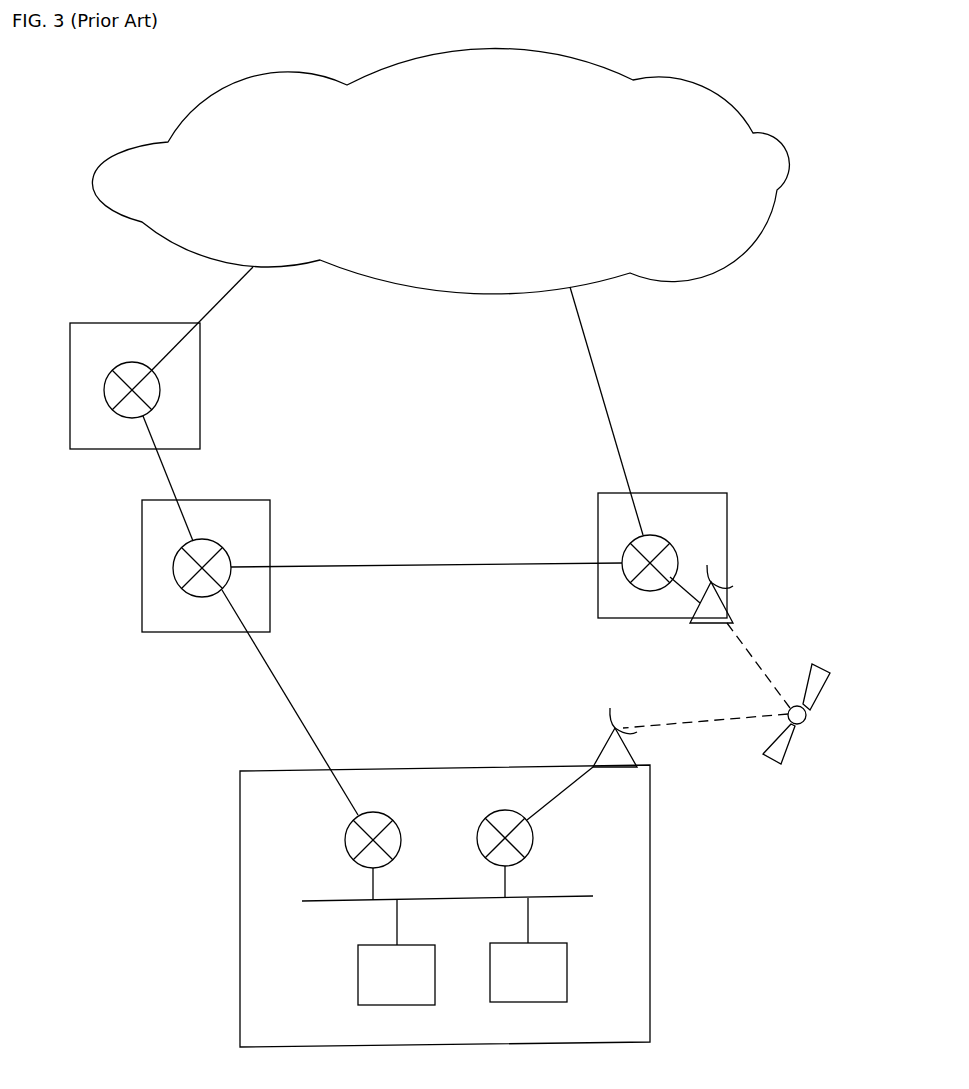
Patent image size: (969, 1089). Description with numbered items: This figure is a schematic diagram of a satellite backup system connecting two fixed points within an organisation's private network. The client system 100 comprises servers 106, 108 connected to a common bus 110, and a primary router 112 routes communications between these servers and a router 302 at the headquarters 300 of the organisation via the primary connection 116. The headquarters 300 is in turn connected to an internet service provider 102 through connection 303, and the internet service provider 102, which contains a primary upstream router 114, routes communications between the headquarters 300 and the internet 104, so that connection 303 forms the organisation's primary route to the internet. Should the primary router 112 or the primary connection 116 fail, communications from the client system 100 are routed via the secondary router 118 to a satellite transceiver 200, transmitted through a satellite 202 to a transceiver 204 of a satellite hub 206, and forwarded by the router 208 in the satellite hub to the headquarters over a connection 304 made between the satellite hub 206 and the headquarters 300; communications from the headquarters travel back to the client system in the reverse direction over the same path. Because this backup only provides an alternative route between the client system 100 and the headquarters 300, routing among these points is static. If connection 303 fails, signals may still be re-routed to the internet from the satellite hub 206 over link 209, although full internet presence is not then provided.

The client system 100 is at (240, 995).
The internet service provider 102 is at (70, 412).
The internet 104 is at (183, 263).
The server 106 is at (388, 1005).
The server 108 is at (540, 1003).
The common bus 110 is at (550, 898).
The primary router 112 is at (345, 838).
The primary upstream router 114 is at (163, 386).
The primary connection 116 is at (275, 690).
The secondary router 118 is at (533, 828).
The satellite transceiver 200 is at (602, 749).
The satellite 202 is at (807, 720).
The transceiver 204 is at (702, 623).
The satellite hub 206 is at (730, 492).
The router 208 is at (677, 552).
The link 209 is at (607, 405).
The headquarters 300 is at (138, 606).
The router 302 is at (233, 563).
The connection 303 is at (160, 463).
The connection 304 is at (446, 563).